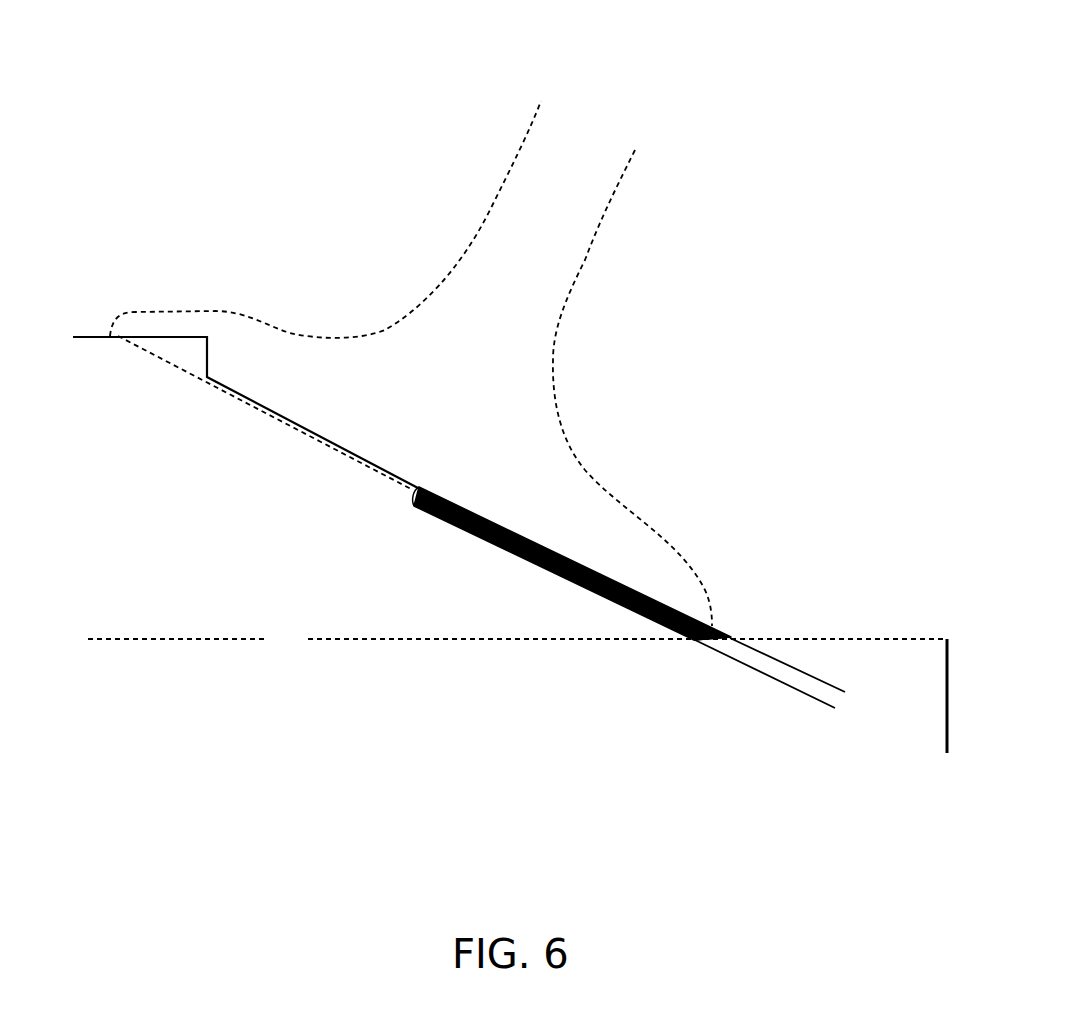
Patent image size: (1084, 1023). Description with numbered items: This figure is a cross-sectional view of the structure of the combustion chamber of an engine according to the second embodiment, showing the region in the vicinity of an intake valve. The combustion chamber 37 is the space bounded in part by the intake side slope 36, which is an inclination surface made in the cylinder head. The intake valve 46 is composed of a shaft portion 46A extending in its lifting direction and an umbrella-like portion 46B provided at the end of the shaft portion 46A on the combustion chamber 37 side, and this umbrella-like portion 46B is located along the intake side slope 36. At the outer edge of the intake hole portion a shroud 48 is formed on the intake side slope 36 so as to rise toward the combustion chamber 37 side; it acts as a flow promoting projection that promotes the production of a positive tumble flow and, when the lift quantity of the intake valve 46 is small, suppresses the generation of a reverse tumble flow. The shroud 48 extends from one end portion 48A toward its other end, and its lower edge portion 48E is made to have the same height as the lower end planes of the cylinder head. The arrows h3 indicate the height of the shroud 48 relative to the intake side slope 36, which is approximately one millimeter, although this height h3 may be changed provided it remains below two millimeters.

The intake side slope 36 is at (240, 395).
The combustion chamber 37 is at (302, 653).
The intake valve 46 is at (411, 363).
The shaft portion 46A is at (602, 217).
The umbrella-like portion 46B is at (277, 334).
The shroud 48 is at (521, 601).
The one end portion 48A is at (414, 502).
The lower edge portion 48E is at (697, 641).
The height of the shroud h3 is at (835, 663).